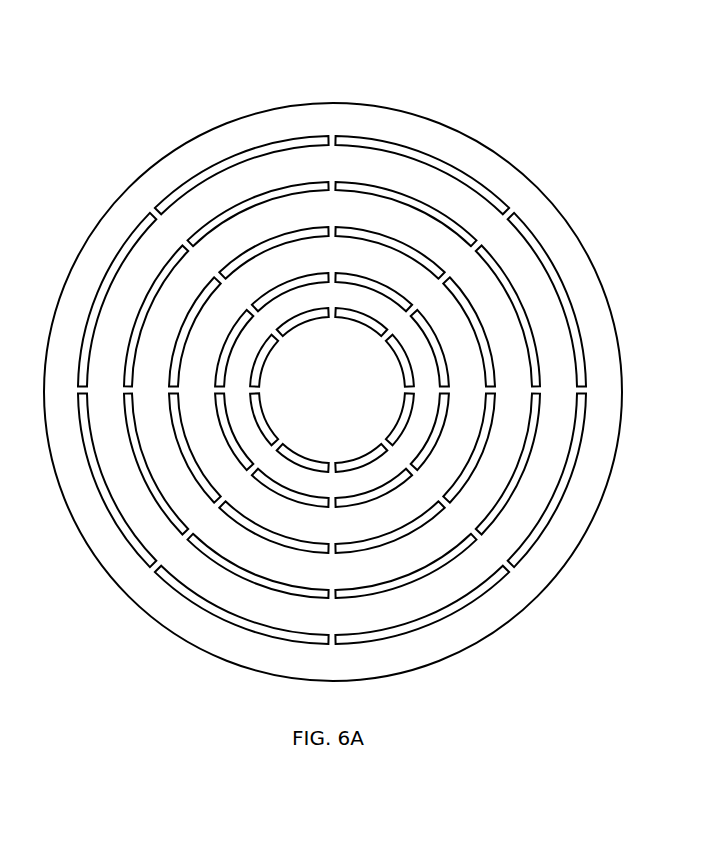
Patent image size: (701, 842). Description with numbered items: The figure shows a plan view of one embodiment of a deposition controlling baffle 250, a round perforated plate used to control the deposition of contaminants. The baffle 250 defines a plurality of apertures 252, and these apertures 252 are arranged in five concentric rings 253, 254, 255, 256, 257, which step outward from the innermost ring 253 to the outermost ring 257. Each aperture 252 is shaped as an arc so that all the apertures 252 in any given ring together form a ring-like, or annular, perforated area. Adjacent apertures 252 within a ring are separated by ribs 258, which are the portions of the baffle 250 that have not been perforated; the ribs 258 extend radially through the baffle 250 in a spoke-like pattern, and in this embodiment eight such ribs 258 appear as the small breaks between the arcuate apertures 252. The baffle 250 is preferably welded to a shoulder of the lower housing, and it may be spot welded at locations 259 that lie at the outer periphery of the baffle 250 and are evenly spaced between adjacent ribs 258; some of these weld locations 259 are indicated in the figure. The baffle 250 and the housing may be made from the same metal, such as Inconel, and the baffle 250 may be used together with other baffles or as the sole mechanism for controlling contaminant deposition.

The deposition controlling baffle 250 is at (362, 402).
The apertures 252 is at (257, 484).
The first concentric ring of apertures 253 is at (270, 363).
The second concentric ring of apertures 254 is at (349, 271).
The third concentric ring of apertures 255 is at (349, 224).
The fourth concentric ring of apertures 256 is at (349, 178).
The fifth concentric ring of apertures 257 is at (350, 133).
The ribs 258 is at (513, 206).
The spot weld locations 259 is at (223, 122).